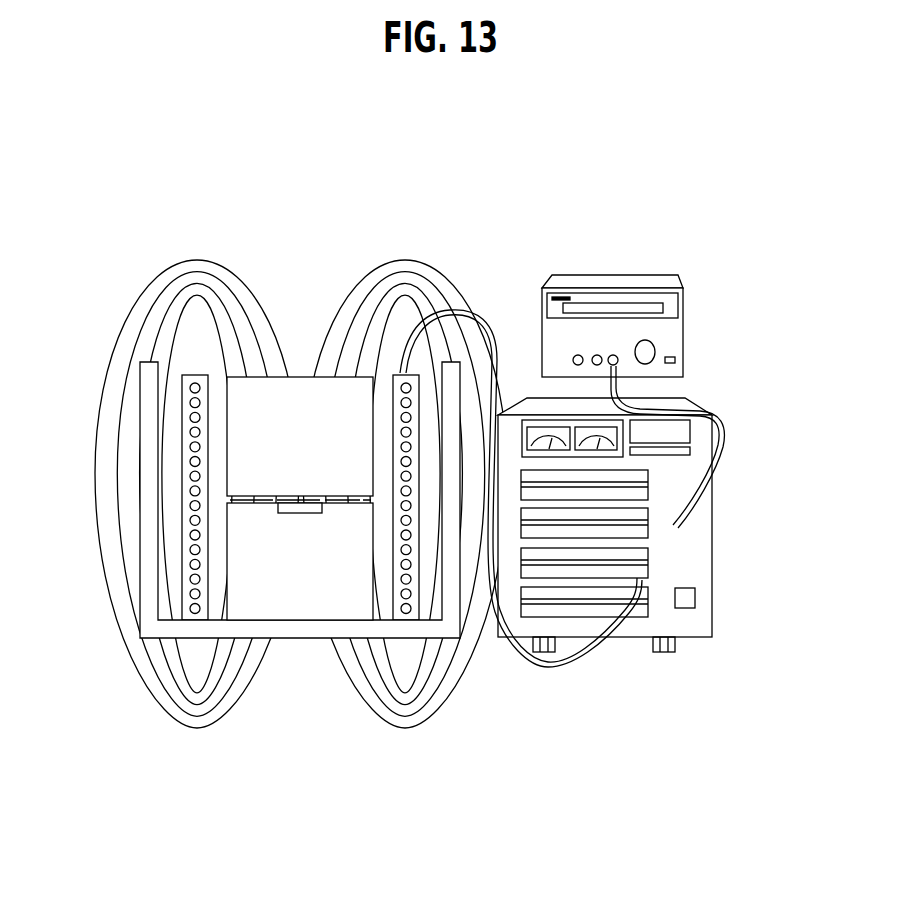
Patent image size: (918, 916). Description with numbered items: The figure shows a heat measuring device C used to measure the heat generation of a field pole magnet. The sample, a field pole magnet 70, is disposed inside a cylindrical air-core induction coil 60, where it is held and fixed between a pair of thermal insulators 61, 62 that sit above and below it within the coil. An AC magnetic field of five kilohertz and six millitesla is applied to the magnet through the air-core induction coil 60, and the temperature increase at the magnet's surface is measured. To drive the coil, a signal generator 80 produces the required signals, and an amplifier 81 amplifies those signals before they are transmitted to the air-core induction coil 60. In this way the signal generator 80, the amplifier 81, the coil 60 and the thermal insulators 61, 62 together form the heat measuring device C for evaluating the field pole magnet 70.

The air-core induction coil 60 is at (200, 375).
The thermal insulator 61 is at (298, 400).
The thermal insulator 62 is at (287, 602).
The field pole magnet 70 is at (300, 508).
The signal generator 80 is at (678, 280).
The amplifier 81 is at (705, 618).
The heat measuring device C is at (318, 466).